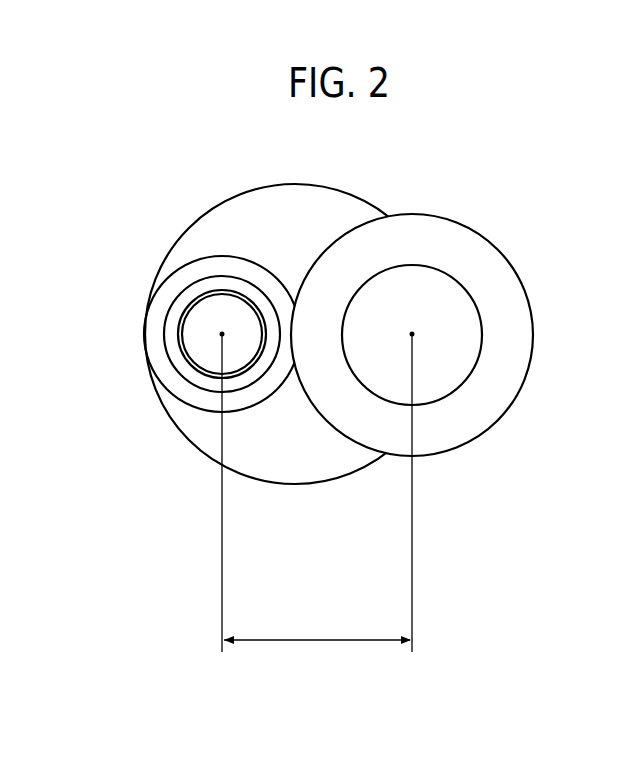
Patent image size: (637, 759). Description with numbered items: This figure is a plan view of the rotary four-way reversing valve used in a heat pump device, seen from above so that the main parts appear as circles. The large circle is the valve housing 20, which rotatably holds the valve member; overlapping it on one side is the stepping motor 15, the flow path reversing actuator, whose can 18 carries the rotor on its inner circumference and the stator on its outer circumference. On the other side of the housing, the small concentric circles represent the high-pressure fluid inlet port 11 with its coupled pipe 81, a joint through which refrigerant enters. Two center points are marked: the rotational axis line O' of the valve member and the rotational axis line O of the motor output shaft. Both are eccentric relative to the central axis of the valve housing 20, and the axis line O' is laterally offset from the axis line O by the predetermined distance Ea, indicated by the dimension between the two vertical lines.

The valve housing 20 is at (225, 196).
The pipe 81 is at (188, 322).
The high-pressure fluid inlet port 11 is at (196, 300).
The stepping motor 15 is at (428, 313).
The can 18 is at (471, 227).
The rotational axis line of the output shaft O is at (488, 492).
The rotational axis line of the valve member O' is at (128, 492).
The predetermined distance Ea is at (317, 624).